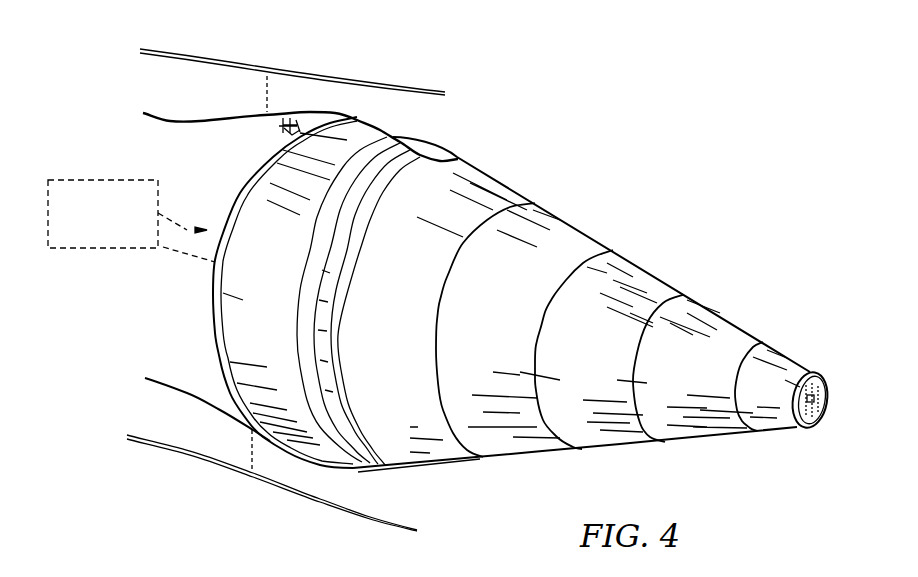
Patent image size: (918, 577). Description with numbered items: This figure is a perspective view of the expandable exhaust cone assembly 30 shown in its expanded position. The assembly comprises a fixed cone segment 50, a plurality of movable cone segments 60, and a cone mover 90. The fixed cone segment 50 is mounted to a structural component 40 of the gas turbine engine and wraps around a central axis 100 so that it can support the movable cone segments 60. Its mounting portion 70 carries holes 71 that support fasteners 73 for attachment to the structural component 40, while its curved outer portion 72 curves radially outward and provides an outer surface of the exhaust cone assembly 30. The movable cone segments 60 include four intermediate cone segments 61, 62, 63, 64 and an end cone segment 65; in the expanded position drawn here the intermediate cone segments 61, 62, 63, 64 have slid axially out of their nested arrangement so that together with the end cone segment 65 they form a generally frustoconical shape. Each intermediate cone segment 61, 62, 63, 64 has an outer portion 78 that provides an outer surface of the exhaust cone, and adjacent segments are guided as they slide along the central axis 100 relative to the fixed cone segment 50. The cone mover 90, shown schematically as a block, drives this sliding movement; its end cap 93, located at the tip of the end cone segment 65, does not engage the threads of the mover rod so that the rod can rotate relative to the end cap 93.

The expandable exhaust cone assembly 30 is at (747, 84).
The structural component 40 is at (168, 115).
The fixed cone segment 50 is at (424, 118).
The movable cone segments 60 is at (820, 280).
The intermediate cone segment 61 is at (530, 178).
The intermediate cone segment 62 is at (593, 224).
The intermediate cone segment 63 is at (668, 276).
The intermediate cone segment 64 is at (740, 318).
The end cone segment 65 is at (807, 358).
The mounting portion 70 is at (290, 112).
The holes 71 is at (304, 122).
The curved outer portion 72 is at (393, 136).
The fasteners 73 is at (361, 121).
The outer portion 78 is at (423, 467).
The cone mover 90 is at (97, 250).
The end cap 93 is at (818, 400).
The central axis 100 is at (175, 258).